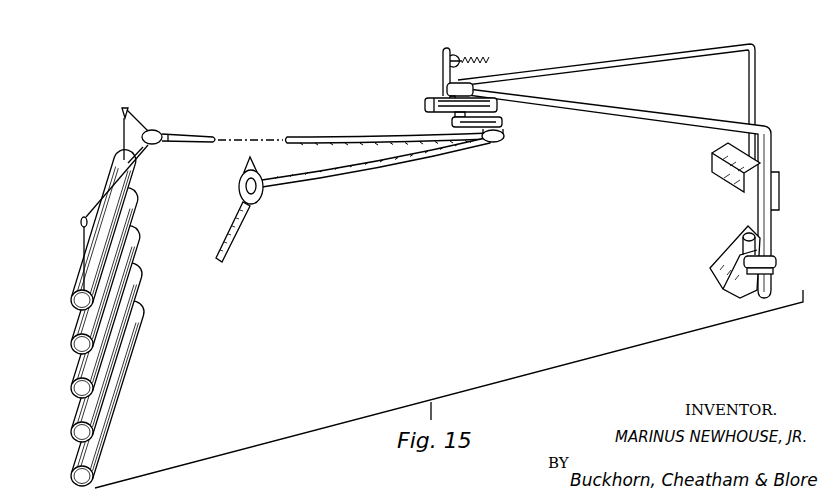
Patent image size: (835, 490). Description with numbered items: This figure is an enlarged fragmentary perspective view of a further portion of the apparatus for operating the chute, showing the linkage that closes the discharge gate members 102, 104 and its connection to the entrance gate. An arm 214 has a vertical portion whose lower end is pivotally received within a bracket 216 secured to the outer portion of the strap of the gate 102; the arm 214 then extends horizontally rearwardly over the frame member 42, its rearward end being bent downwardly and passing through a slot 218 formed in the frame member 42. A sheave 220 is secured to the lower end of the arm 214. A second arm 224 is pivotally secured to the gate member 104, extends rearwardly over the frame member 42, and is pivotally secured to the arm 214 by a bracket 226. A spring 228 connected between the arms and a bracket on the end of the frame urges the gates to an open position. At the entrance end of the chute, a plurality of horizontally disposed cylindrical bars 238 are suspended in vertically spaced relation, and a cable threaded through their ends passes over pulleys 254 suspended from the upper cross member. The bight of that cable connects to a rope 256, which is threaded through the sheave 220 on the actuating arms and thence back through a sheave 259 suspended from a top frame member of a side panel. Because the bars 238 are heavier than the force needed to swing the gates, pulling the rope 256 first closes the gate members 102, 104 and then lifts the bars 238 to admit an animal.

The frame member 42 is at (428, 106).
The discharge gate member 102 is at (722, 278).
The discharge gate member 104 is at (716, 168).
The arm 214 is at (642, 118).
The bracket 216 is at (759, 262).
The slot 218 is at (498, 108).
The sheave 220 is at (500, 140).
The arm 224 is at (617, 55).
The bracket 226 is at (463, 90).
The spring 228 is at (482, 58).
The cylindrical bars 238 is at (137, 316).
The pulleys 254 is at (128, 109).
The rope 256 is at (198, 136).
The sheave 259 is at (259, 188).